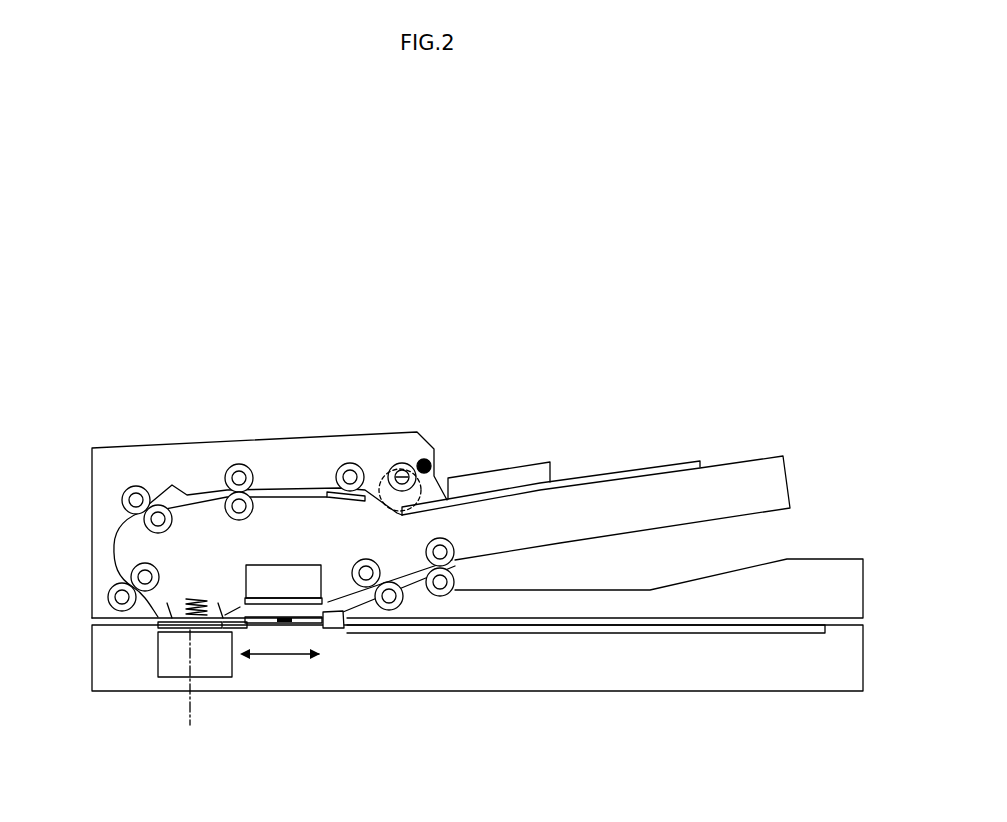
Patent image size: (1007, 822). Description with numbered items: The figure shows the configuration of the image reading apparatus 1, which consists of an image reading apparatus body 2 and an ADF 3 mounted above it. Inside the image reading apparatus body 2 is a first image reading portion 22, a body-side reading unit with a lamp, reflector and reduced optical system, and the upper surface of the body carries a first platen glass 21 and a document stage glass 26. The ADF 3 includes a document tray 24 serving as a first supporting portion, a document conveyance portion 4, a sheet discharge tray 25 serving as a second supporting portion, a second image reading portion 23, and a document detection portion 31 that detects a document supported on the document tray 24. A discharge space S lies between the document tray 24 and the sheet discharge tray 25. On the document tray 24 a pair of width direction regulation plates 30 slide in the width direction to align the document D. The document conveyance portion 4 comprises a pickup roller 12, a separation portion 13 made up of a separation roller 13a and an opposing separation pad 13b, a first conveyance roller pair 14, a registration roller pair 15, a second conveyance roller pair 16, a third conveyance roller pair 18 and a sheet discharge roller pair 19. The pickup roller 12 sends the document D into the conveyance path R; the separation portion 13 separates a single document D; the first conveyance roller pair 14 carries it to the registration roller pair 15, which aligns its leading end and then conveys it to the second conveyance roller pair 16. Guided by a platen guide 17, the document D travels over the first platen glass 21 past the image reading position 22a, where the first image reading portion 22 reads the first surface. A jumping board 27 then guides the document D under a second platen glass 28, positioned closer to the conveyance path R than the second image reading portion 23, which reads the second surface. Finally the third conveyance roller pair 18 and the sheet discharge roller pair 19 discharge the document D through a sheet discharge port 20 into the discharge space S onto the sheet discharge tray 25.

The image reading apparatus 1 is at (807, 371).
The image reading apparatus body 2 is at (645, 692).
The ADF 3 is at (91, 480).
The document conveyance portion 4 is at (414, 457).
The pickup roller 12 is at (402, 463).
The separation portion 13 is at (327, 431).
The separation roller 13a is at (336, 477).
The separation pad 13b is at (345, 501).
The first conveyance roller pair 14 is at (240, 464).
The registration roller pair 15 is at (137, 485).
The second conveyance roller pair 16 is at (131, 582).
The platen guide 17 is at (167, 606).
The third conveyance roller pair 18 is at (386, 611).
The sheet discharge roller pair 19 is at (438, 597).
The sheet discharge port 20 is at (458, 566).
The first platen glass 21 is at (157, 625).
The first image reading portion 22 is at (157, 667).
The image reading position 22a is at (191, 691).
The second image reading portion 23 is at (245, 577).
The document tray 24 is at (738, 462).
The sheet discharge tray 25 is at (815, 559).
The document stage glass 26 is at (765, 633).
The jumping board 27 is at (338, 628).
The second platen glass 28 is at (330, 597).
The width direction regulation plates 30 is at (531, 463).
The document detection portion 31 is at (434, 449).
The document D is at (673, 465).
The discharge space S is at (746, 535).
The conveyance path R is at (117, 543).